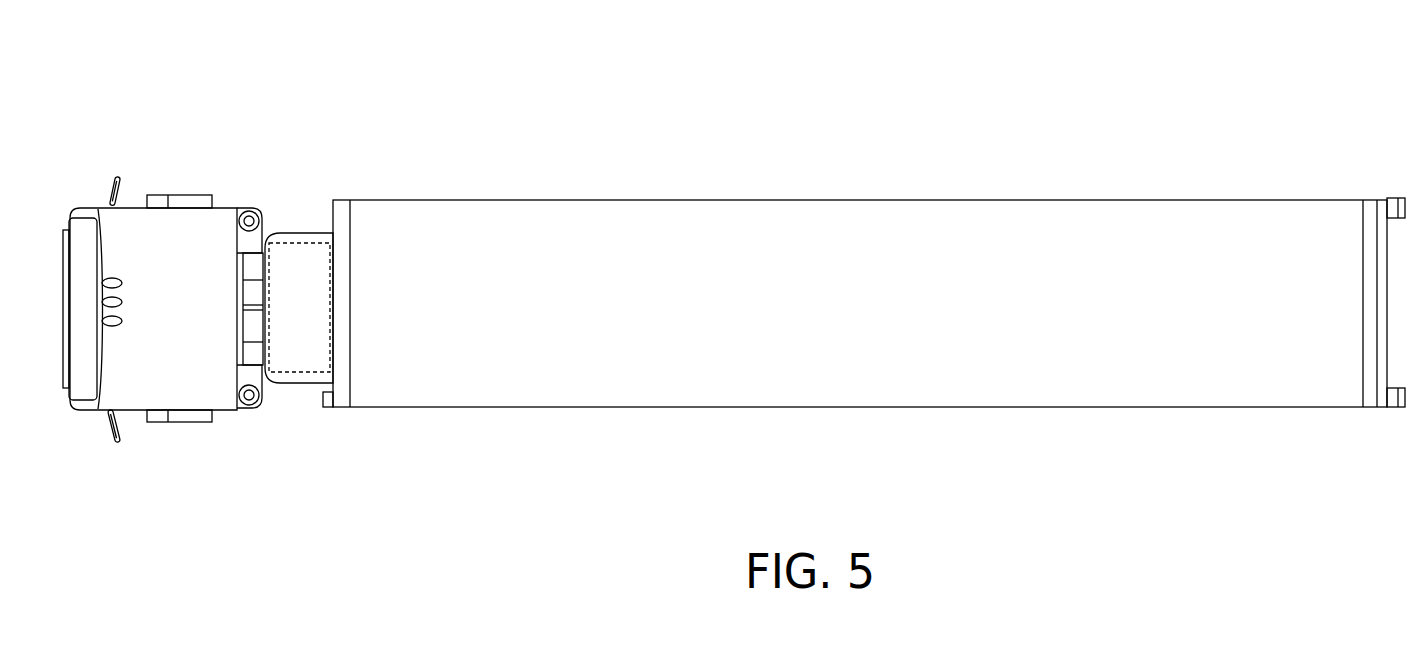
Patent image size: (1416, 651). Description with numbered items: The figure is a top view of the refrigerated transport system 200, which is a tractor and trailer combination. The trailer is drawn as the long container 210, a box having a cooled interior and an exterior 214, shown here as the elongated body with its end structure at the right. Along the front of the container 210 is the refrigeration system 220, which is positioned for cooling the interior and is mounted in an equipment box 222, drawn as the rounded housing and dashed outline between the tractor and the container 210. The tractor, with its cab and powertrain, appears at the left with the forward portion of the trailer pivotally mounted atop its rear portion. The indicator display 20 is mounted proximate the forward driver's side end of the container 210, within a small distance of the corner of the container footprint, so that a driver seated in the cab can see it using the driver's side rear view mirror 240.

The refrigerated transport system 200 is at (734, 264).
The container 210 is at (864, 263).
The exterior 214 is at (1133, 178).
The refrigeration system 220 is at (333, 263).
The equipment box 222 is at (313, 315).
The indicator display 20 is at (332, 397).
The driver's side rear view mirror 240 is at (118, 448).